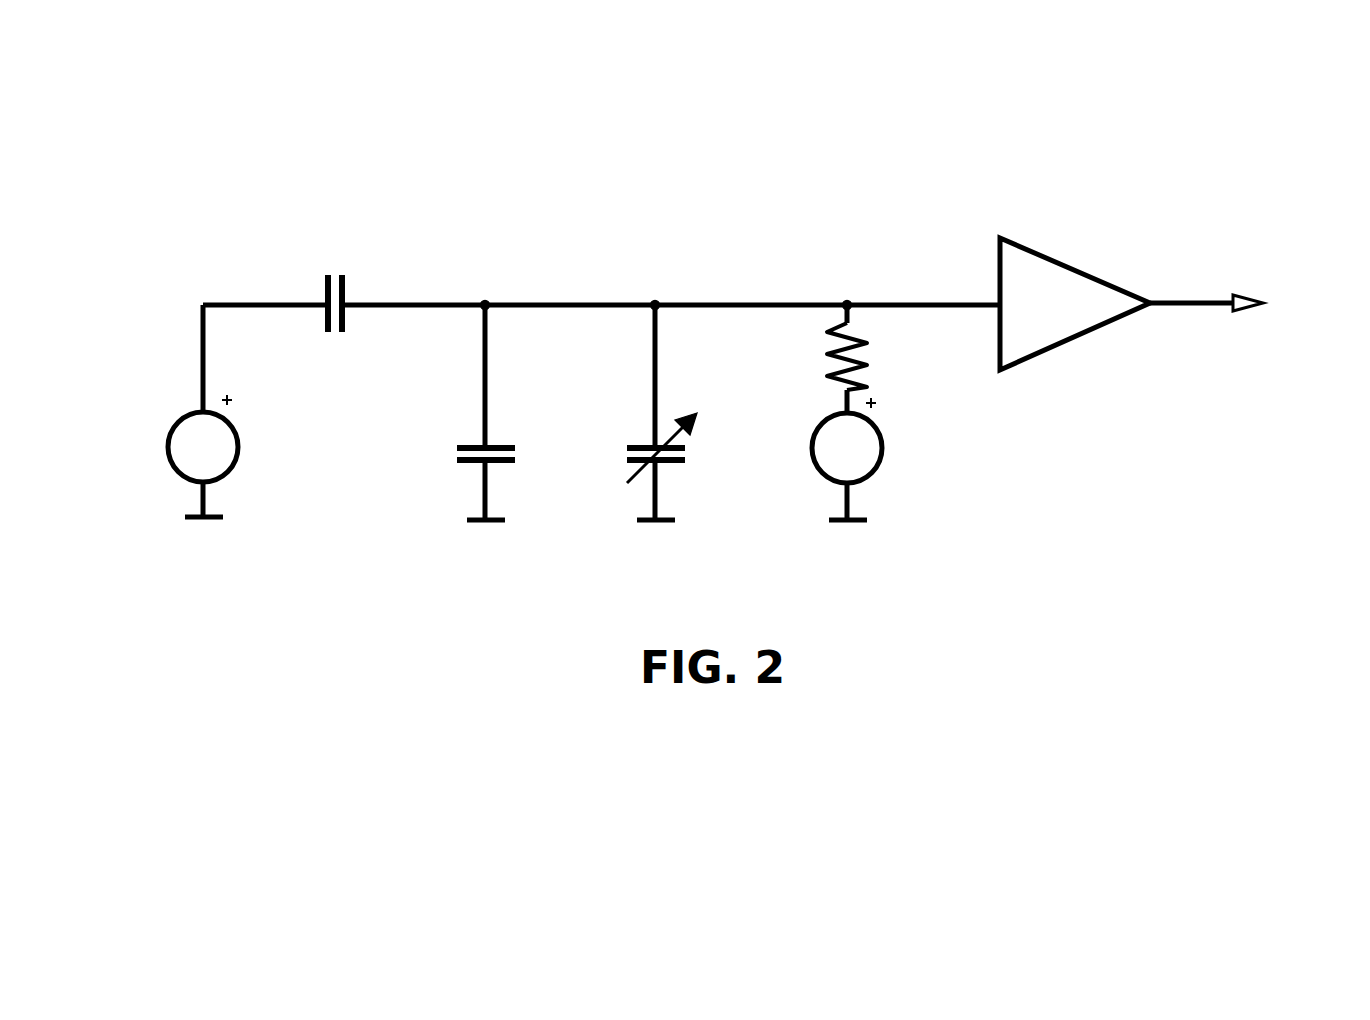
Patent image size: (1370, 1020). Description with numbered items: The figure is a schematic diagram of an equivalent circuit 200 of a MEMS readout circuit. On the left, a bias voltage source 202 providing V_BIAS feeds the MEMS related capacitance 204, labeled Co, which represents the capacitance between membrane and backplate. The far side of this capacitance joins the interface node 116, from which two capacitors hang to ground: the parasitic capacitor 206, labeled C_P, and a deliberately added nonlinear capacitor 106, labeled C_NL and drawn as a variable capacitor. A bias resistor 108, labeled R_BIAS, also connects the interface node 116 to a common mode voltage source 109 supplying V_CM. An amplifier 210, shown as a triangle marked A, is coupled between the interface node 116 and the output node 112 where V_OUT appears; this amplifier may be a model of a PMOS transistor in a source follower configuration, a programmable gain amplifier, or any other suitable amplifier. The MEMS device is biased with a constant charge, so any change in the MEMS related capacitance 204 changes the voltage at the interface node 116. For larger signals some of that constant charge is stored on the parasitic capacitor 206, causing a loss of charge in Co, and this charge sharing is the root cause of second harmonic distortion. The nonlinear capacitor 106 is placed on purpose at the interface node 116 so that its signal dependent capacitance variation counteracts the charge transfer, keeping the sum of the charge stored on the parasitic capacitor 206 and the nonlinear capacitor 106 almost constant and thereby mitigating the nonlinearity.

The equivalent circuit 200 is at (278, 172).
The bias voltage source 202 is at (238, 447).
The MEMS related capacitance 204 is at (345, 283).
The parasitic capacitor 206 is at (494, 443).
The nonlinear capacitor 106 is at (665, 463).
The interface node 116 is at (843, 296).
The bias resistor 108 is at (822, 342).
The common mode voltage source 109 is at (880, 460).
The amplifier 210 is at (1037, 345).
The output node 112 is at (1197, 300).